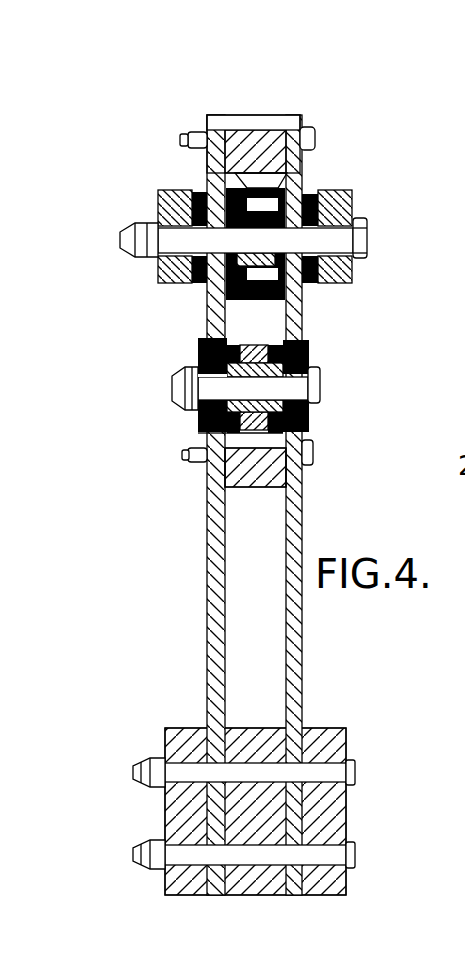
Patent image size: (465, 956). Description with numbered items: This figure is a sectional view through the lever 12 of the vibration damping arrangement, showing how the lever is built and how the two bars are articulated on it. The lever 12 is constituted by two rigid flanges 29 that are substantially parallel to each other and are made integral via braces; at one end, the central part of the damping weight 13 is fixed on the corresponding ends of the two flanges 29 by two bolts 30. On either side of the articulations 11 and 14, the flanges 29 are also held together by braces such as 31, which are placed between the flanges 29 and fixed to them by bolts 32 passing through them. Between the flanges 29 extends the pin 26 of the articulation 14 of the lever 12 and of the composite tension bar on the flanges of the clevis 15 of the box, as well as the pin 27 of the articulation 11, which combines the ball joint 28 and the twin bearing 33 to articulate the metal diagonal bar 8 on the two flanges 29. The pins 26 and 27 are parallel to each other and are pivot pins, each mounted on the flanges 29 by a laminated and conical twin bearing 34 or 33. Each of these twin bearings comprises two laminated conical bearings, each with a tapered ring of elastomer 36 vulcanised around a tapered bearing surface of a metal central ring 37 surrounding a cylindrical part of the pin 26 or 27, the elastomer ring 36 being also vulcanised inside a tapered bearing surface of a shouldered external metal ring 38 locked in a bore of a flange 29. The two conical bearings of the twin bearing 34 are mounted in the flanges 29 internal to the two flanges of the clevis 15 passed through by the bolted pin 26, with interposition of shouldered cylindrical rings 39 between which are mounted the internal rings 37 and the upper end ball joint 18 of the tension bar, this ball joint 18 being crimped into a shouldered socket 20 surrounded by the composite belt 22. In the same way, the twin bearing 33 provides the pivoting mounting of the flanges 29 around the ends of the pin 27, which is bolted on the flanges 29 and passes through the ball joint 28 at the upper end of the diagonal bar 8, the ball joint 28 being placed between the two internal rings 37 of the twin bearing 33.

The diagonal bar 8 is at (183, 457).
The articulation 11 is at (200, 435).
The lever 12 is at (243, 505).
The damping weight 13 is at (260, 740).
The articulation 14 is at (292, 184).
The clevis 15 is at (353, 196).
The upper end ball joint 18 is at (215, 203).
The shouldered socket 20 is at (336, 200).
The composite belt 22 is at (240, 190).
The pin 26 is at (335, 240).
The pin 27 is at (222, 390).
The ball joint 28 is at (200, 415).
The flanges 29 is at (216, 617).
The bolts 30 is at (310, 857).
The braces 31 is at (262, 125).
The bolts 32 is at (200, 138).
The twin bearing 33 is at (198, 355).
The twin bearing 34 is at (158, 200).
The tapered ring of elastomer 36 is at (352, 269).
The metal central ring 37 is at (356, 221).
The shouldered external metal ring 38 is at (308, 292).
The shouldered cylindrical rings 39 is at (367, 256).